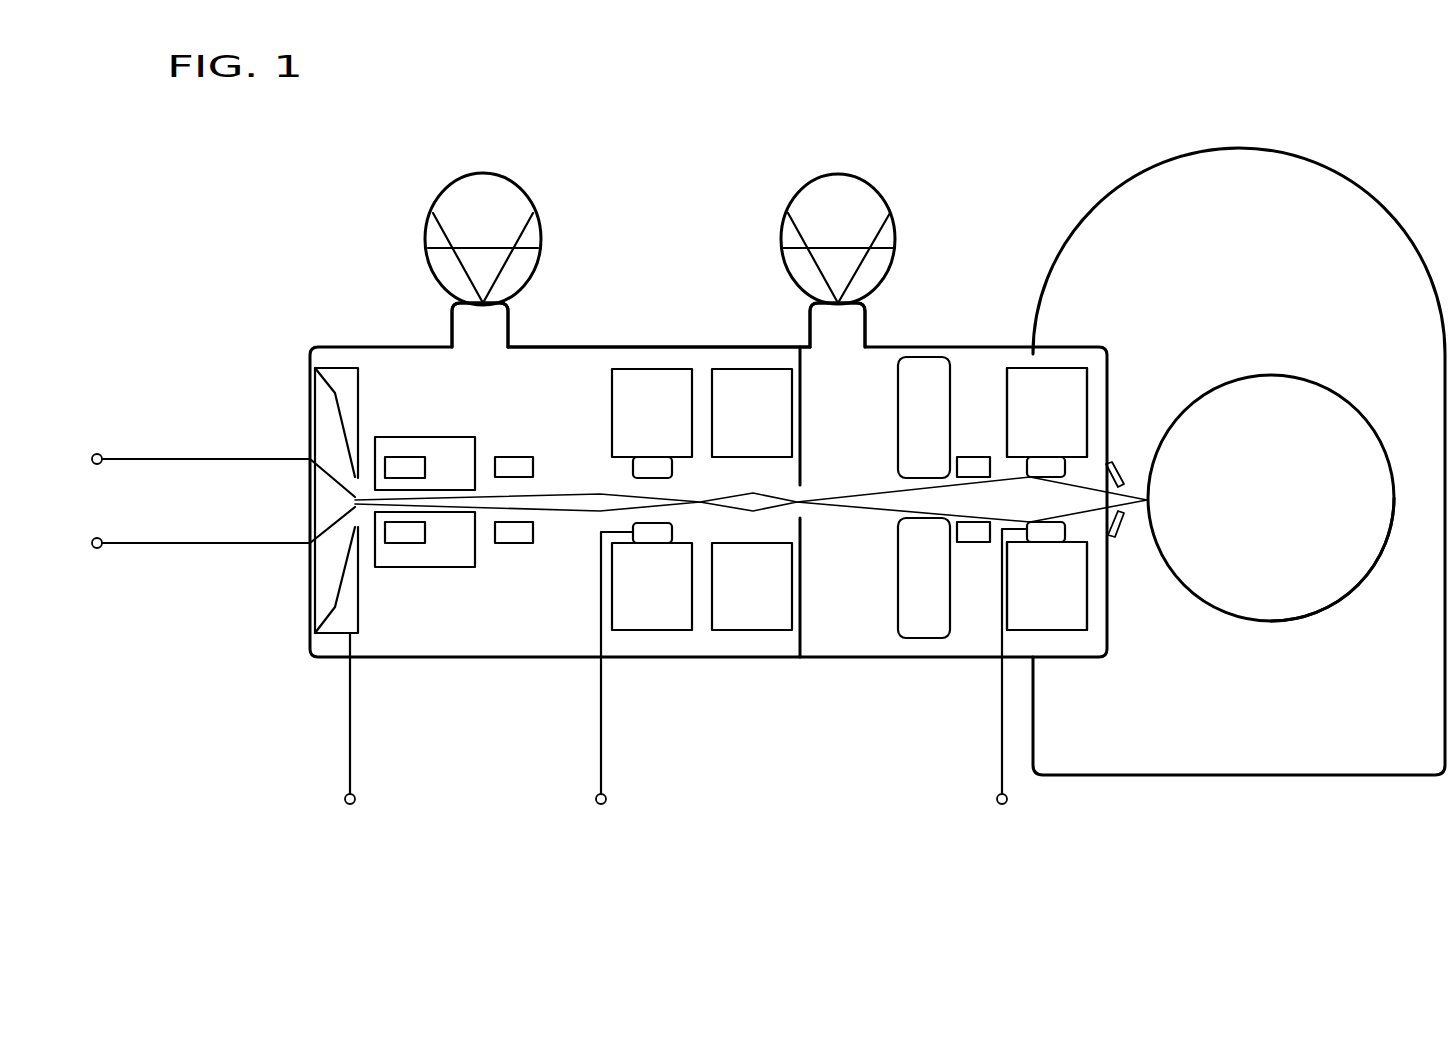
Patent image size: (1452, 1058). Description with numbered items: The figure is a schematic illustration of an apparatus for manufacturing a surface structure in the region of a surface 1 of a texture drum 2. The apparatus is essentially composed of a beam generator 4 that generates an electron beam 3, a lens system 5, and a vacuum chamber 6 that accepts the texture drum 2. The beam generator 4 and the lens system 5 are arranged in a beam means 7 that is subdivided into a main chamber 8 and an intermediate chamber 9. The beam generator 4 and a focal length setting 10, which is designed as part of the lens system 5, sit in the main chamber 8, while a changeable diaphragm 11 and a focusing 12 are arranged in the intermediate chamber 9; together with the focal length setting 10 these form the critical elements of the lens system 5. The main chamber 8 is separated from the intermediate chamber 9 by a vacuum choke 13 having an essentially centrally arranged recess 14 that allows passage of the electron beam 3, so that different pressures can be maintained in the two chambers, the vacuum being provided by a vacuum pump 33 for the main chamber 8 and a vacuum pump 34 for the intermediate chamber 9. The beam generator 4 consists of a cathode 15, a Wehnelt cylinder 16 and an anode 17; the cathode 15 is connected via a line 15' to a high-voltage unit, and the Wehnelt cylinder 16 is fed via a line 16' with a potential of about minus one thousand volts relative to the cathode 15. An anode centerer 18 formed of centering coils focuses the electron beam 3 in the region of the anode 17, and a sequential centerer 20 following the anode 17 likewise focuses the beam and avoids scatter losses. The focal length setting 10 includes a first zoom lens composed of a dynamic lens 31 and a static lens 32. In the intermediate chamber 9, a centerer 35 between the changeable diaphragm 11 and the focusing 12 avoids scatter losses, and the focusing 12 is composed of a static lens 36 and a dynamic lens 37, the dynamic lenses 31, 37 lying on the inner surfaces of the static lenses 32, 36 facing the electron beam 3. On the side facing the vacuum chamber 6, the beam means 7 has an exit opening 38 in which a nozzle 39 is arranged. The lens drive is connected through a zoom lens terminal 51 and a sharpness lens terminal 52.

The surface 1 is at (1345, 393).
The texture drum 2 is at (1328, 568).
The electron beam 3 is at (577, 507).
The beam generator 4 is at (307, 392).
The lens system 5 is at (735, 657).
The vacuum chamber 6 is at (1212, 287).
The beam means 7 is at (751, 347).
The main chamber 8 is at (405, 378).
The intermediate chamber 9 is at (868, 372).
The focal length setting 10 is at (665, 657).
The changeable diaphragm 11 is at (923, 640).
The focusing 12 is at (1033, 383).
The vacuum choke 13 is at (805, 603).
The recess 14 is at (803, 496).
The cathode 15 is at (269, 501).
The line 15' is at (201, 501).
The Wehnelt cylinder 16 is at (316, 548).
The line 16' is at (377, 747).
The anode 17 is at (450, 568).
The anode centerer 18 is at (400, 533).
The sequential centerer 20 is at (513, 455).
The dynamic lens 31 is at (633, 467).
The static lens 32 is at (650, 388).
The vacuum pump 33 is at (527, 190).
The vacuum pump 34 is at (882, 190).
The centerer 35 is at (973, 455).
The static lens 36 is at (1087, 388).
The dynamic lens 37 is at (1065, 465).
The exit opening 38 is at (1108, 522).
The nozzle 39 is at (1120, 520).
The zoom lens terminal 51 is at (606, 797).
The sharpness lens terminal 52 is at (1007, 797).